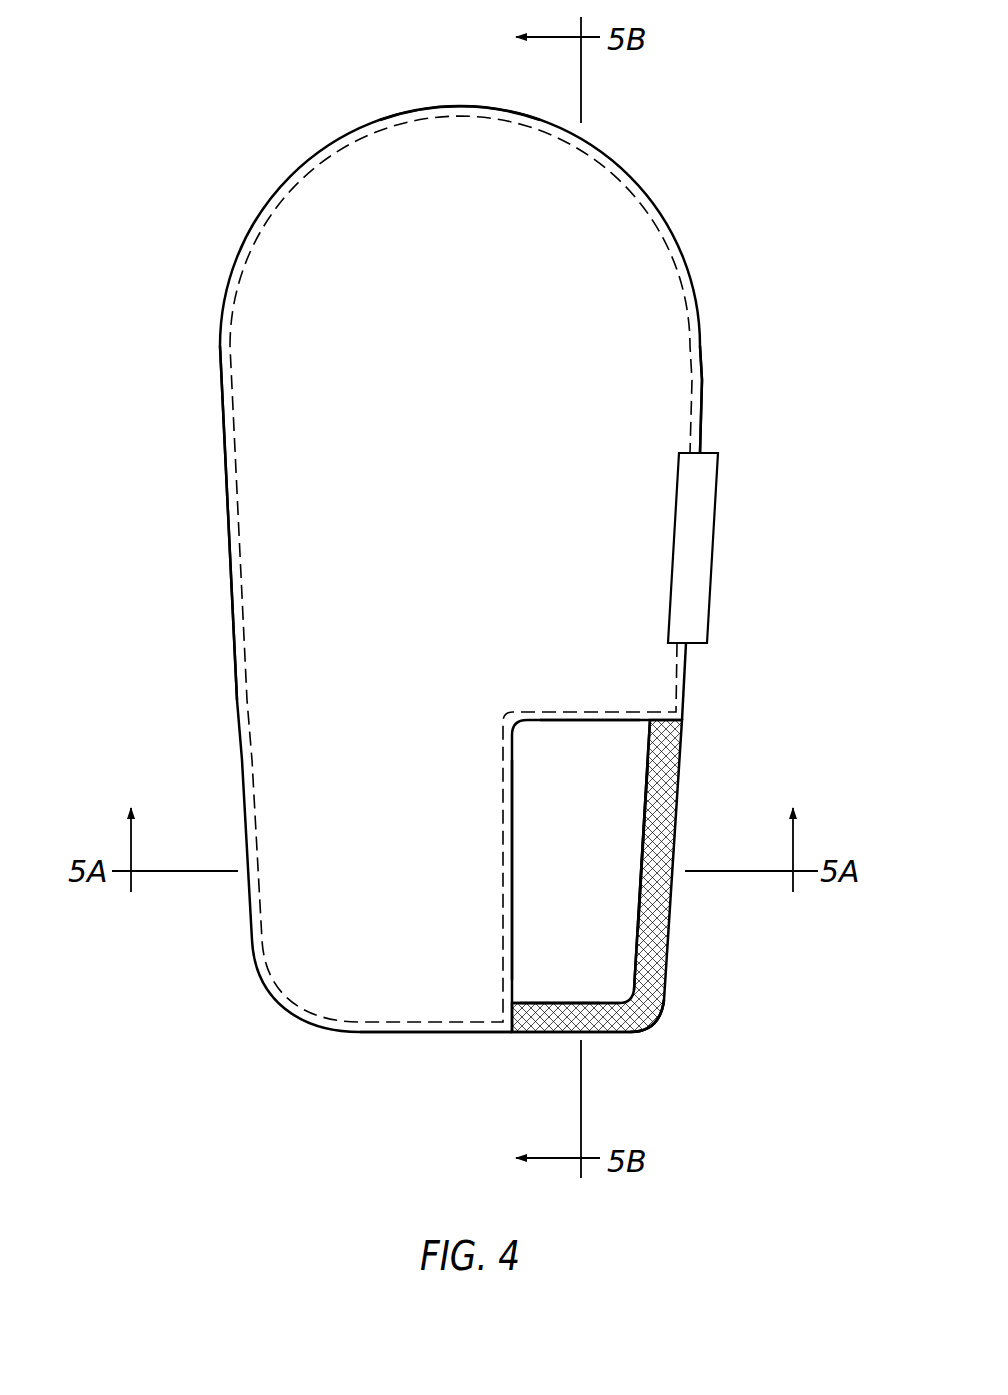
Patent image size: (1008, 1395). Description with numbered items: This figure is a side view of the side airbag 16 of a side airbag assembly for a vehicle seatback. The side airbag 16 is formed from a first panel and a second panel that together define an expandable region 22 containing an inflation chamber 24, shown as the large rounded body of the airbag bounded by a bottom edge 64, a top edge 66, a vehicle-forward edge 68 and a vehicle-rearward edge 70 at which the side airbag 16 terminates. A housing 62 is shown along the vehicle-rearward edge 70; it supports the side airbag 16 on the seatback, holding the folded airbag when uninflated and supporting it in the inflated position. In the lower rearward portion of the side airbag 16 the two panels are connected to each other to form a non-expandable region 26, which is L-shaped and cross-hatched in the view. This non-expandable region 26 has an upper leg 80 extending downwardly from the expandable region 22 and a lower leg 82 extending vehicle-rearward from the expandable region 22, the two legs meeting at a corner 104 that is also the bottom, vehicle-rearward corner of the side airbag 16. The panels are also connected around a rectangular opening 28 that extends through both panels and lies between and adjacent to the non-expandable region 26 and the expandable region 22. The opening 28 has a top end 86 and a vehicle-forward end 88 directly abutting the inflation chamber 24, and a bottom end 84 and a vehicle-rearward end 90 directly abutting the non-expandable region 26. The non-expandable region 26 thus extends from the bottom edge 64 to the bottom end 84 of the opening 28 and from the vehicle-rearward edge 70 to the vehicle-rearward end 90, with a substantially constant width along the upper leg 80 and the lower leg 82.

The side airbag 16 is at (297, 116).
The expandable region 22 is at (310, 285).
The inflation chamber 24 is at (230, 410).
The non-expandable region 26 is at (648, 965).
The opening 28 is at (602, 784).
The housing 62 is at (718, 497).
The bottom edge 64 is at (443, 1033).
The top edge 66 is at (445, 106).
The vehicle-forward edge 68 is at (227, 575).
The vehicle-rearward edge 70 is at (703, 378).
The upper leg 80 is at (650, 913).
The lower leg 82 is at (600, 1018).
The bottom end 84 is at (580, 1000).
The top end 86 is at (604, 724).
The vehicle-forward end 88 is at (512, 890).
The vehicle-rearward end 90 is at (640, 886).
The corner 104 is at (652, 1022).